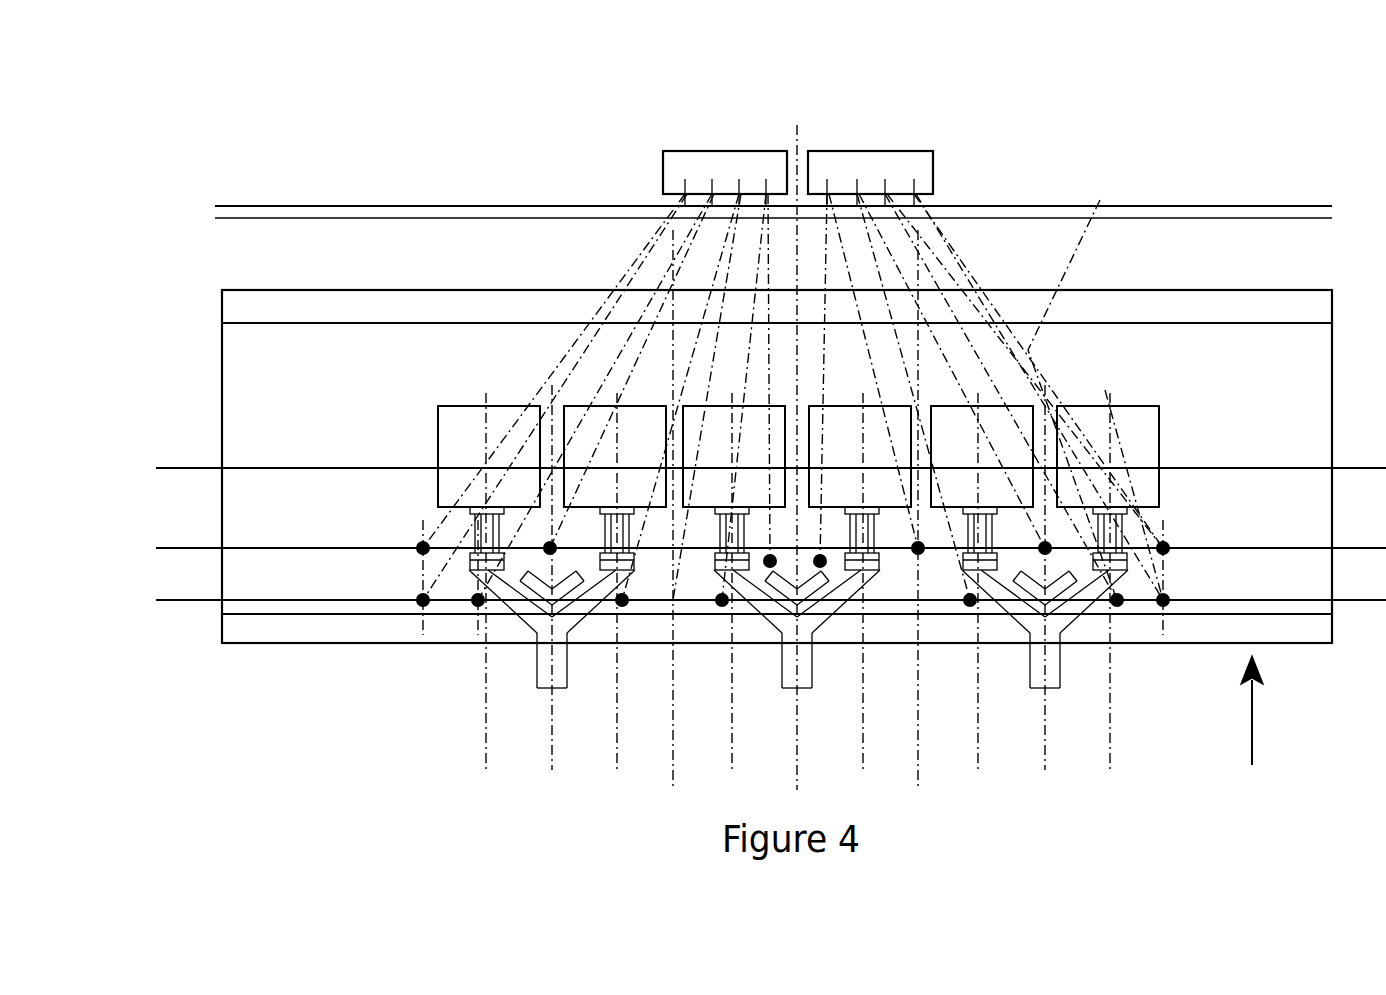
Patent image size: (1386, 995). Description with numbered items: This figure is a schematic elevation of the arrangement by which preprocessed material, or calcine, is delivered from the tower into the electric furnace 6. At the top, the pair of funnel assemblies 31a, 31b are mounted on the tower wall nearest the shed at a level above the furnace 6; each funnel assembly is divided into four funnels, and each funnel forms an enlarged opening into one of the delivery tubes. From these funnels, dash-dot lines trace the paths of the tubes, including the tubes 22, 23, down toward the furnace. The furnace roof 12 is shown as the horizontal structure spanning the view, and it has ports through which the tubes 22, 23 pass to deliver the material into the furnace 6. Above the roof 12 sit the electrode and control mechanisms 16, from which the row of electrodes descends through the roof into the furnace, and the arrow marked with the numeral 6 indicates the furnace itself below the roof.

The funnel assembly 31a is at (720, 158).
The funnel assembly 31b is at (892, 148).
The tube 22 is at (1100, 200).
The tube 23 is at (1105, 390).
The electrode and control mechanism 16 is at (1158, 440).
The furnace roof 12 is at (378, 418).
The electric furnace 6 is at (1253, 737).